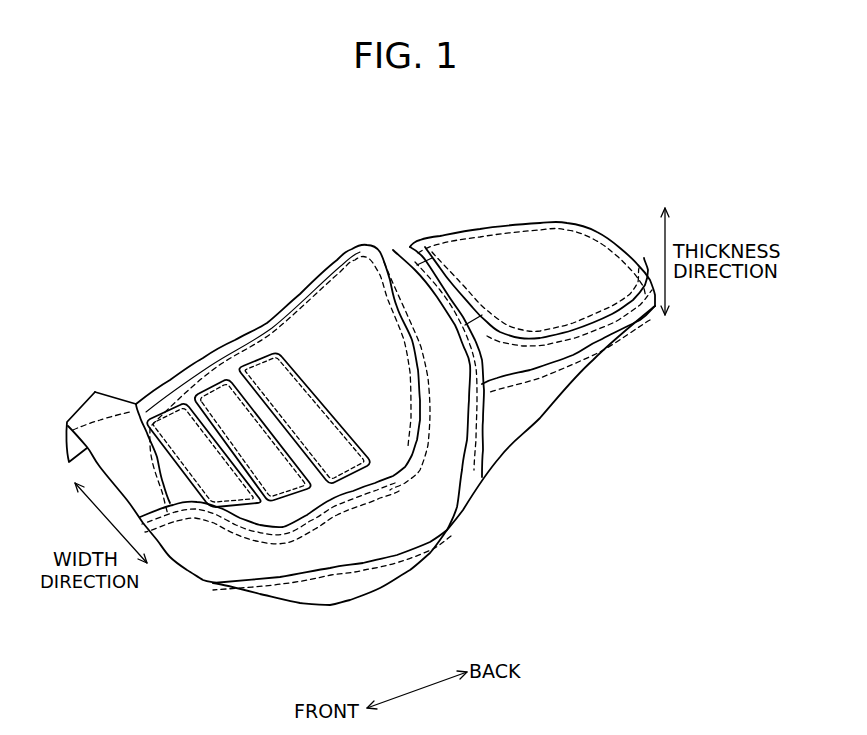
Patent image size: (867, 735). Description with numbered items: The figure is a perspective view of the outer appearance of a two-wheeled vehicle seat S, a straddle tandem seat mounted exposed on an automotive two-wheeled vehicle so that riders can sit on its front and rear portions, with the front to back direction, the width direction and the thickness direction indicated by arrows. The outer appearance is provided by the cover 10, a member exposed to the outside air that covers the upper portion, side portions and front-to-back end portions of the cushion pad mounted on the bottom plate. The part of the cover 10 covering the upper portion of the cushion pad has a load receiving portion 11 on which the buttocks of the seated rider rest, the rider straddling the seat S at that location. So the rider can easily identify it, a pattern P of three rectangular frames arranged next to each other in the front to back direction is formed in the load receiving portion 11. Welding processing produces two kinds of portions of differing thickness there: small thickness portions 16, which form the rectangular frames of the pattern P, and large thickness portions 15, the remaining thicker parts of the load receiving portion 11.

The two-wheeled vehicle seat S is at (278, 226).
The cover 10 is at (352, 242).
The load receiving portion 11 is at (373, 465).
The pattern P is at (205, 360).
The large thickness portion 15 is at (230, 487).
The small thickness portion 16 is at (192, 473).